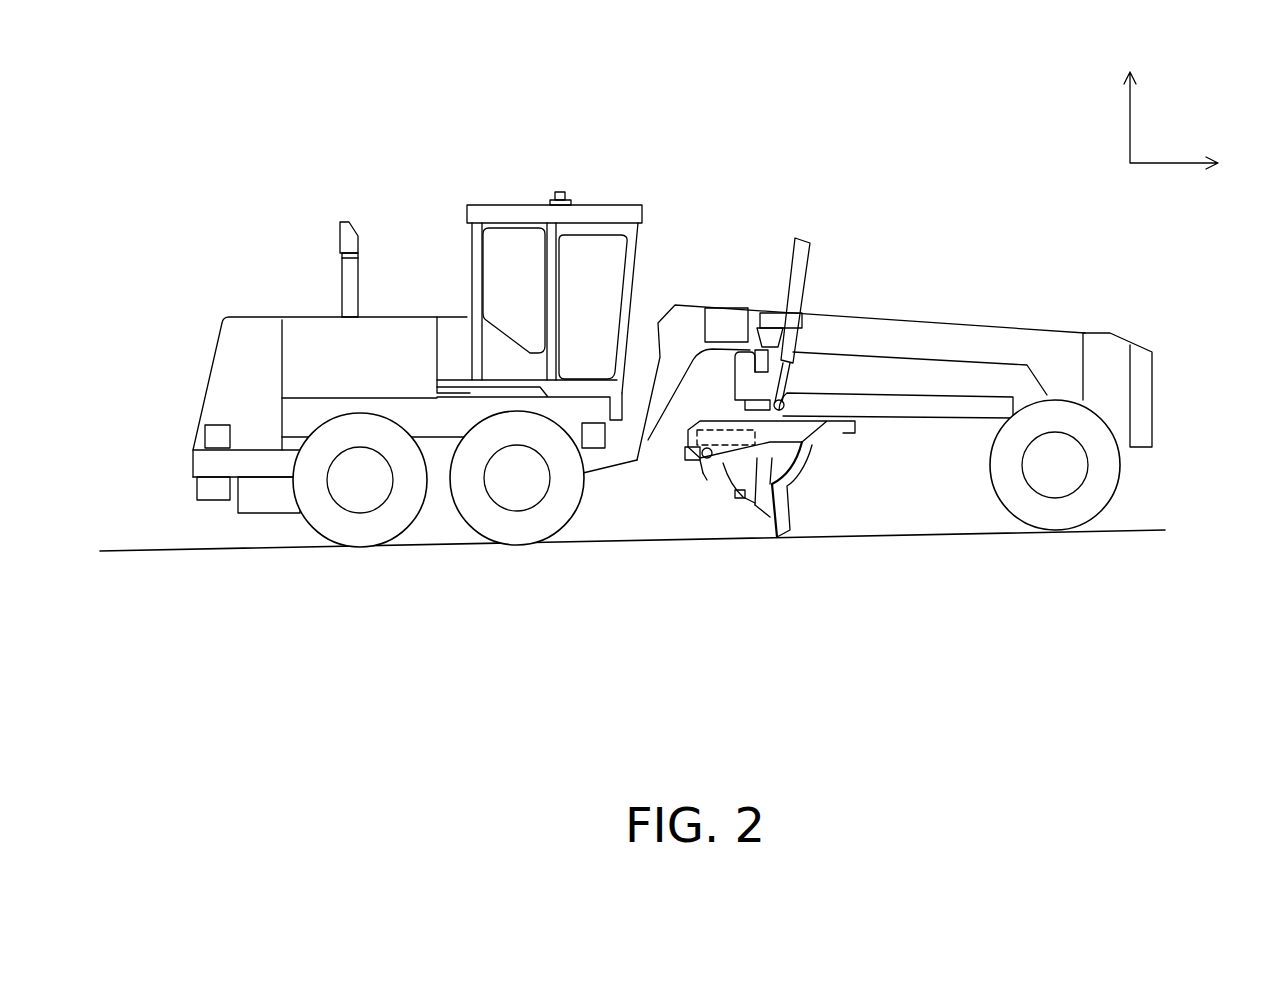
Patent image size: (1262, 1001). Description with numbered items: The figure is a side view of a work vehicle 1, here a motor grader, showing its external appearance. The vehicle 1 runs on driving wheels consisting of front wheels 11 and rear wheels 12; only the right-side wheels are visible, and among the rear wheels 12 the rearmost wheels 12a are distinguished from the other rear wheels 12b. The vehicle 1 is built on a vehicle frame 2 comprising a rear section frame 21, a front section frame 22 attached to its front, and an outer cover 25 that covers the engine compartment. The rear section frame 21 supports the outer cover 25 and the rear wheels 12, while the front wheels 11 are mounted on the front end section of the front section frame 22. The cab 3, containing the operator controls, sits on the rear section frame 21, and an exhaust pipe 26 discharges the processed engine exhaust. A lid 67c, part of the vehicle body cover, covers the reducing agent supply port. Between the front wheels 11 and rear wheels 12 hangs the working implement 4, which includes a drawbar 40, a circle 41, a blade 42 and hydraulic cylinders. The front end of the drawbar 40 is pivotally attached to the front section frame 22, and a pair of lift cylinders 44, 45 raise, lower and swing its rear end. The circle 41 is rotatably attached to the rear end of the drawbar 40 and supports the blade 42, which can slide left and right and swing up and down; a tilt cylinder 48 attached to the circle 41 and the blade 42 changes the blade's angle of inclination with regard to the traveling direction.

The work vehicle 1 is at (669, 372).
The vehicle frame 2 is at (672, 388).
The cab 3 is at (499, 205).
The working implement 4 is at (849, 372).
The front wheels 11 is at (1062, 522).
The rear wheels 12 is at (438, 555).
The rearmost wheels 12a is at (367, 533).
The rear wheels 12b is at (517, 523).
The rear section frame 21 is at (270, 478).
The front section frame 22 is at (955, 337).
The outer cover 25 is at (377, 353).
The exhaust pipe 26 is at (350, 238).
The drawbar 40 is at (955, 400).
The circle 41 is at (843, 432).
The blade 42 is at (763, 510).
The lift cylinder 44 is at (786, 273).
The lift cylinder 45 is at (795, 257).
The tilt cylinder 48 is at (720, 480).
The lid 67c is at (217, 425).